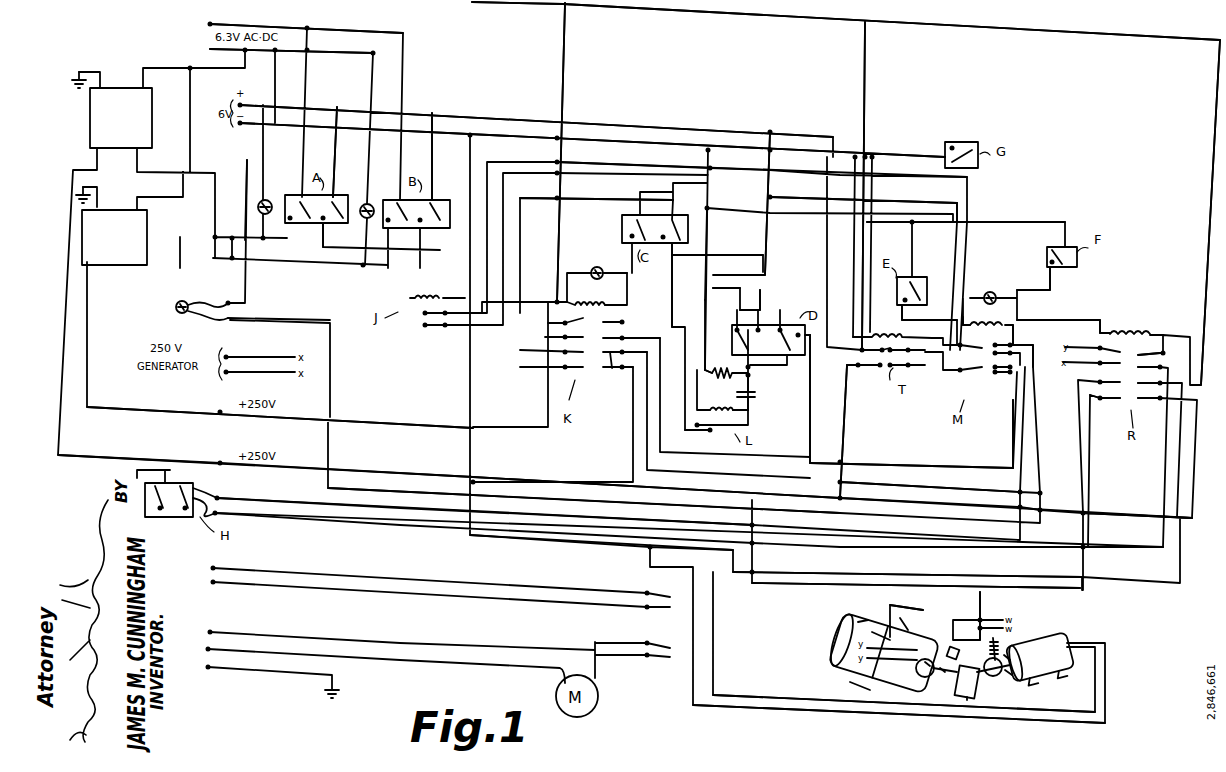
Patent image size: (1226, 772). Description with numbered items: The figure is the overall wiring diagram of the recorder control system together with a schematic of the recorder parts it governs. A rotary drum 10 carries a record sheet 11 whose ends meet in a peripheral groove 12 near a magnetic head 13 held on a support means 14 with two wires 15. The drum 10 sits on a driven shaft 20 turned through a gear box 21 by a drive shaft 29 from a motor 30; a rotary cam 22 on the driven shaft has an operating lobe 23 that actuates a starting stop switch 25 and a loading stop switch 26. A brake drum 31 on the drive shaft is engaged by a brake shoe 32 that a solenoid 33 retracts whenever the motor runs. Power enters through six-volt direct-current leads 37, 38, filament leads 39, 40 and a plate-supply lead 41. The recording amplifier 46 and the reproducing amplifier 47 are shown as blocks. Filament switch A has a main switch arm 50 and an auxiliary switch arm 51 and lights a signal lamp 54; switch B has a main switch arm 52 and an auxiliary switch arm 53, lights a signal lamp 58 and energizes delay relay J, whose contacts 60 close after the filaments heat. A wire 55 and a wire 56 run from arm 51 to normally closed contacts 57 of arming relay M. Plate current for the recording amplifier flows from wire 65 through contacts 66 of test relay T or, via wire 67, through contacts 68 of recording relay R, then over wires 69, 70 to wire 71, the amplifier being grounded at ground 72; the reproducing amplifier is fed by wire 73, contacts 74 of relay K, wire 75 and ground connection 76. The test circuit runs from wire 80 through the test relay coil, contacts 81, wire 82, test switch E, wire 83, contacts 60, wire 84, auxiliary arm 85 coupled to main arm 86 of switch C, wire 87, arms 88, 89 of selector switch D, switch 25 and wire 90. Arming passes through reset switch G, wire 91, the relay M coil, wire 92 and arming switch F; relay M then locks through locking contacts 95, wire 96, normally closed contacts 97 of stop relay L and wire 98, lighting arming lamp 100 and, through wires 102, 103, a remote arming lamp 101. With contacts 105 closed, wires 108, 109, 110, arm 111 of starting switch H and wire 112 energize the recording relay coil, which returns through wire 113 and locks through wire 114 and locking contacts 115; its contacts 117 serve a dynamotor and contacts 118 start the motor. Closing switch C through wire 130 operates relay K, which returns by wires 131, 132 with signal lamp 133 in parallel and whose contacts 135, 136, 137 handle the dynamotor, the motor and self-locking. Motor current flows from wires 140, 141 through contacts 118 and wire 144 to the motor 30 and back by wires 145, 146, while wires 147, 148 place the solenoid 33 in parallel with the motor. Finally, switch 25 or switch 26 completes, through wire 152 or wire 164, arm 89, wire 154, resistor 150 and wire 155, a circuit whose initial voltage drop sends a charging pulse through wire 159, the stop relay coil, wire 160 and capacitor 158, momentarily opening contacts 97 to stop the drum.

The rotary drum 10 is at (830, 636).
The sheet 11 is at (846, 680).
The longitudinal peripheral groove 12 is at (855, 618).
The magnetic head 13 is at (905, 622).
The support means 14 is at (870, 632).
The wires 15 is at (923, 610).
The driven shaft 20 is at (955, 685).
The gear box 21 is at (972, 697).
The rotary cam 22 is at (940, 672).
The operating lobe 23 is at (930, 668).
The stop switch 25 is at (918, 678).
The second stop switch 26 is at (961, 656).
The drive shaft 29 is at (1012, 675).
The motor 30 is at (1060, 640).
The brake drum 31 is at (996, 675).
The brake shoe 32 is at (1000, 650).
The solenoid 33 is at (1010, 655).
The lead 37 is at (490, 117).
The lead 38 is at (497, 134).
The lead 39 is at (335, 22).
The lead 40 is at (345, 48).
The lead 41 is at (472, 4).
The recording amplifier 46 is at (152, 96).
The reproducing amplifier 47 is at (147, 228).
The main switch arm 50 is at (293, 225).
The auxiliary switch arm 51 is at (347, 188).
The main switch arm 52 is at (395, 238).
The auxiliary switch arm 53 is at (440, 188).
The signal lamp 54 is at (270, 200).
The wire 55 is at (340, 162).
The wire 56 is at (893, 176).
The contacts 57 is at (953, 352).
The signal lamp 58 is at (370, 203).
The contacts 60 is at (432, 328).
The wire 65 is at (866, 80).
The contacts 66 is at (858, 372).
The wire 67 is at (1205, 160).
The contacts 68 is at (1148, 405).
The wire 69 is at (850, 440).
The wire 70 is at (1138, 514).
The wire 71 is at (375, 466).
The ground 72 is at (95, 66).
The wire 73 is at (560, 95).
The contacts 74 is at (565, 324).
The wire 75 is at (378, 412).
The ground connection 76 is at (97, 186).
The wire 80 is at (873, 240).
The contacts 81 is at (978, 372).
The wire 82 is at (932, 316).
The wire 83 is at (785, 226).
The wire 84 is at (570, 188).
The auxiliary arm 85 is at (676, 205).
The main arm 86 is at (623, 226).
The wire 87 is at (716, 322).
The arm 88 is at (808, 337).
The arm 89 is at (768, 340).
The wire 90 is at (760, 247).
The wire 91 is at (975, 193).
The wire 92 is at (1040, 295).
The locking contacts 95 is at (993, 375).
The wire 96 is at (905, 460).
The contacts 97 is at (704, 436).
The wire 98 is at (666, 300).
The arming lamp 100 is at (992, 290).
The second arming lamp 101 is at (193, 298).
The wire 102 is at (248, 160).
The wire 103 is at (592, 504).
The contacts 105 is at (1002, 378).
The wire 108 is at (1033, 368).
The wire 109 is at (1008, 455).
The wire 110 is at (312, 502).
The arm 111 is at (160, 518).
The wire 112 is at (431, 528).
The wire 113 is at (1075, 318).
The wire 114 is at (1105, 544).
The locking contacts 115 is at (1142, 350).
The contacts 117 is at (1112, 330).
The contacts 118 is at (1104, 402).
The wire 130 is at (893, 200).
The wire 131 is at (532, 284).
The wire 132 is at (448, 276).
The signal lamp 133 is at (607, 252).
The contacts 135 is at (565, 372).
The contacts 136 is at (612, 370).
The locking contacts 137 is at (648, 332).
The wire 140 is at (812, 408).
The wire 141 is at (928, 488).
The wire 144 is at (920, 582).
The wire 145 is at (758, 712).
The wire 146 is at (564, 544).
The wire 147 is at (982, 598).
The wire 148 is at (740, 590).
The resistor 150 is at (720, 362).
The wire 152 is at (740, 304).
The wire 154 is at (757, 394).
The wire 155 is at (712, 232).
The capacitor 158 is at (752, 412).
The wire 159 is at (706, 400).
The wire 160 is at (738, 415).
The wire 164 is at (760, 300).